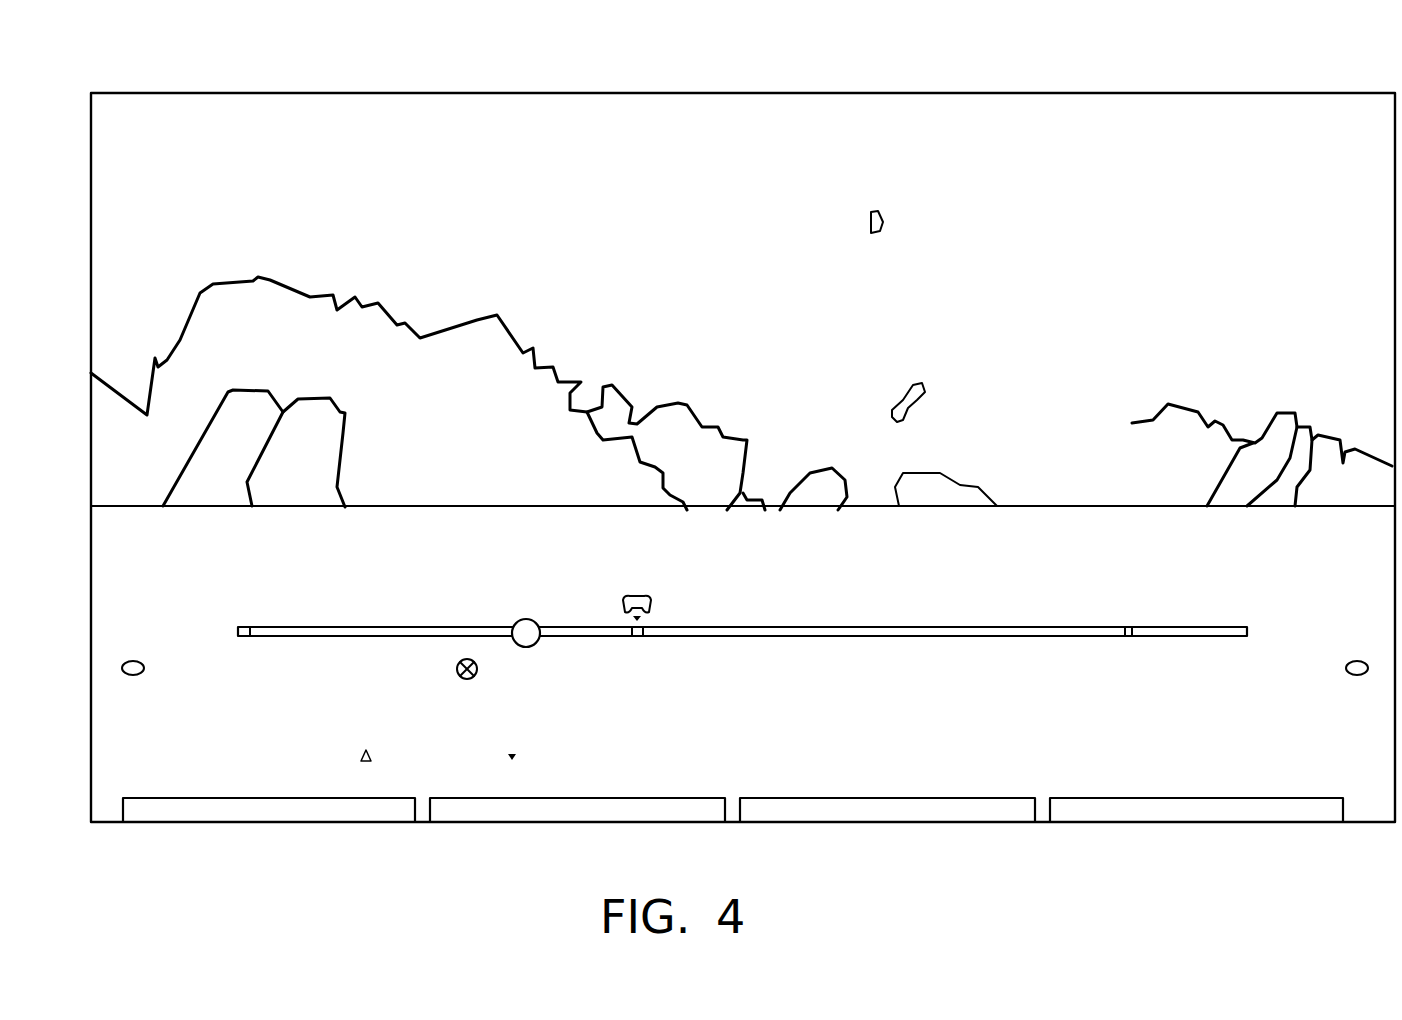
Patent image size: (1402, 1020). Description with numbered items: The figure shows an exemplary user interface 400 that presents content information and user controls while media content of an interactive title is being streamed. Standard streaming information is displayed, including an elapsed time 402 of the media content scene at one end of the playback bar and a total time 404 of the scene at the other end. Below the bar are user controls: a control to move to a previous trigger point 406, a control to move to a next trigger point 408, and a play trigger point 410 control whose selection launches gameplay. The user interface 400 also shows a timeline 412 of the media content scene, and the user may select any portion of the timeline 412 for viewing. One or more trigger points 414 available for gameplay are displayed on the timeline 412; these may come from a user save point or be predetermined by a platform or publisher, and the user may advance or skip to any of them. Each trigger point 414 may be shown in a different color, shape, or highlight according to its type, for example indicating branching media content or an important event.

The user interface 400 is at (1105, 62).
The elapsed time 402 is at (118, 628).
The total time 404 is at (1360, 622).
The previous trigger point control 406 is at (121, 668).
The next trigger point control 408 is at (1366, 676).
The play trigger point control 410 is at (468, 681).
The timeline 412 is at (938, 632).
The trigger points 414 is at (637, 637).